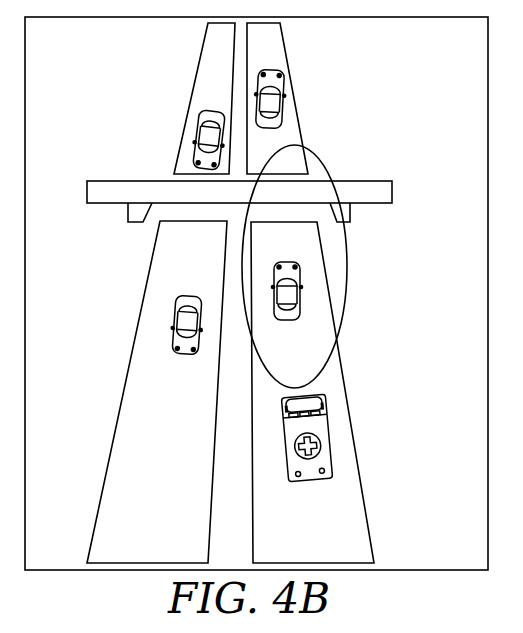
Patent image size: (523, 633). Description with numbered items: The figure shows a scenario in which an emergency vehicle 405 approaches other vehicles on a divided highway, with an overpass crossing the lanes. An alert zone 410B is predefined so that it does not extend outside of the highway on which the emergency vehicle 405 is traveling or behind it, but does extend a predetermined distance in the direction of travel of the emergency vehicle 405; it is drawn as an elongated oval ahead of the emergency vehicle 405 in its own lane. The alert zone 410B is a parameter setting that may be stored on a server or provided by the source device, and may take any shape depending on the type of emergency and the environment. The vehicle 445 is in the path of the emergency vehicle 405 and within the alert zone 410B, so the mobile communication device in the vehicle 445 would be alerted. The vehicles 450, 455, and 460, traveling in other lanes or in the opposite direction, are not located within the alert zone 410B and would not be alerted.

The emergency vehicle 405 is at (323, 442).
The alert zone 410B is at (343, 212).
The vehicle 445 is at (297, 289).
The vehicle 450 is at (281, 100).
The vehicle 455 is at (200, 128).
The vehicle 460 is at (175, 312).